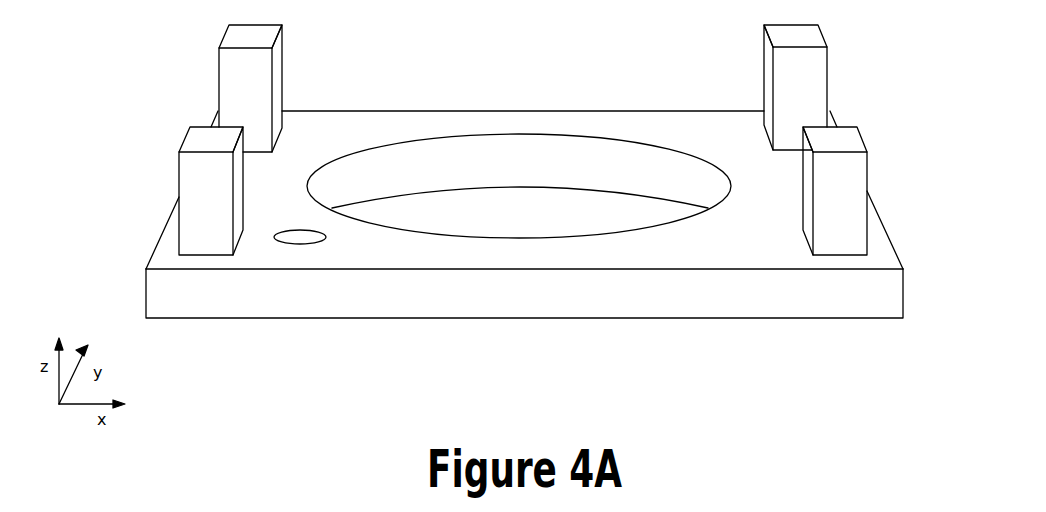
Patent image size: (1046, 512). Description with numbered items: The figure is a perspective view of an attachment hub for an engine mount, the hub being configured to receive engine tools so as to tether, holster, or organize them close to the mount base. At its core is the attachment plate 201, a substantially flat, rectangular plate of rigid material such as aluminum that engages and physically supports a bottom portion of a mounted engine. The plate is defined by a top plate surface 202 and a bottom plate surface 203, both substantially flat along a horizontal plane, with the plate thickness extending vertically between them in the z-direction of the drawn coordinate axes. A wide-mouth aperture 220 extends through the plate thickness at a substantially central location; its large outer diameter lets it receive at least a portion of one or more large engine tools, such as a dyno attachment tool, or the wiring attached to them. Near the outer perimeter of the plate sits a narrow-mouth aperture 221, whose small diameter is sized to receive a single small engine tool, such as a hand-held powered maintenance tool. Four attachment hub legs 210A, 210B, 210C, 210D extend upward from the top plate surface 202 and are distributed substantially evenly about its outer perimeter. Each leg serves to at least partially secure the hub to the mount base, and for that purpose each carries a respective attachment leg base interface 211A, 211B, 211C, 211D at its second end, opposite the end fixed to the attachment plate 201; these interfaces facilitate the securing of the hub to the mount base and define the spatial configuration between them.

The attachment plate 201 is at (518, 224).
The top plate surface 202 is at (697, 248).
The bottom plate surface 203 is at (615, 316).
The attachment hub leg 210A is at (157, 191).
The attachment hub leg 210B is at (207, 87).
The attachment hub leg 210C is at (844, 83).
The attachment hub leg 210D is at (883, 189).
The attachment leg base interface 211A is at (208, 141).
The attachment leg base interface 211B is at (238, 42).
The attachment leg base interface 211C is at (800, 38).
The attachment leg base interface 211D is at (840, 143).
The wide-mouth aperture 220 is at (520, 205).
The narrow-mouth aperture 221 is at (300, 238).